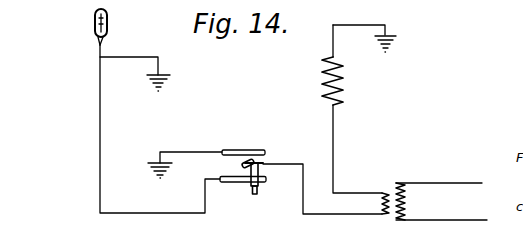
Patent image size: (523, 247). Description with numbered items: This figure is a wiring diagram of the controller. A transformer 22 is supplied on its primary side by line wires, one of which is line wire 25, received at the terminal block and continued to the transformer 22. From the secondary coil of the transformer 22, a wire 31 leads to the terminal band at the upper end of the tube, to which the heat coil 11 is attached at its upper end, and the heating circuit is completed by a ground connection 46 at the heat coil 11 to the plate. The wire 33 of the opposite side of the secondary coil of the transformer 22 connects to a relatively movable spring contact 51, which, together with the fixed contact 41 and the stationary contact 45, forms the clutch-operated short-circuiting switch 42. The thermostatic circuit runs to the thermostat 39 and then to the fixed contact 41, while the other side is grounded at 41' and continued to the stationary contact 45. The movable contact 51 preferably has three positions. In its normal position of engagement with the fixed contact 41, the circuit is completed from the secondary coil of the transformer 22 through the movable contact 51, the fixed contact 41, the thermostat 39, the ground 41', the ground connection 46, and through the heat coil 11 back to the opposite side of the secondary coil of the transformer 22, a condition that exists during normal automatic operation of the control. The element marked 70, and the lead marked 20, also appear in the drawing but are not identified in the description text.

The thermostat 39 is at (95, 30).
The ground 41' is at (168, 122).
The stationary contact 45 is at (237, 149).
The fixed contact 41 is at (243, 197).
The clutch-operated short-circuiting switch 42 is at (269, 137).
The rod tip 70 is at (255, 195).
The movable spring contact 51 is at (268, 162).
The wire 33 is at (303, 209).
The ground connection 46 is at (398, 35).
The heat coil 11 is at (343, 90).
The wire 31 is at (333, 142).
The transformer 22 is at (392, 184).
The secondary lead 20 is at (467, 183).
The line wire 25 is at (468, 220).